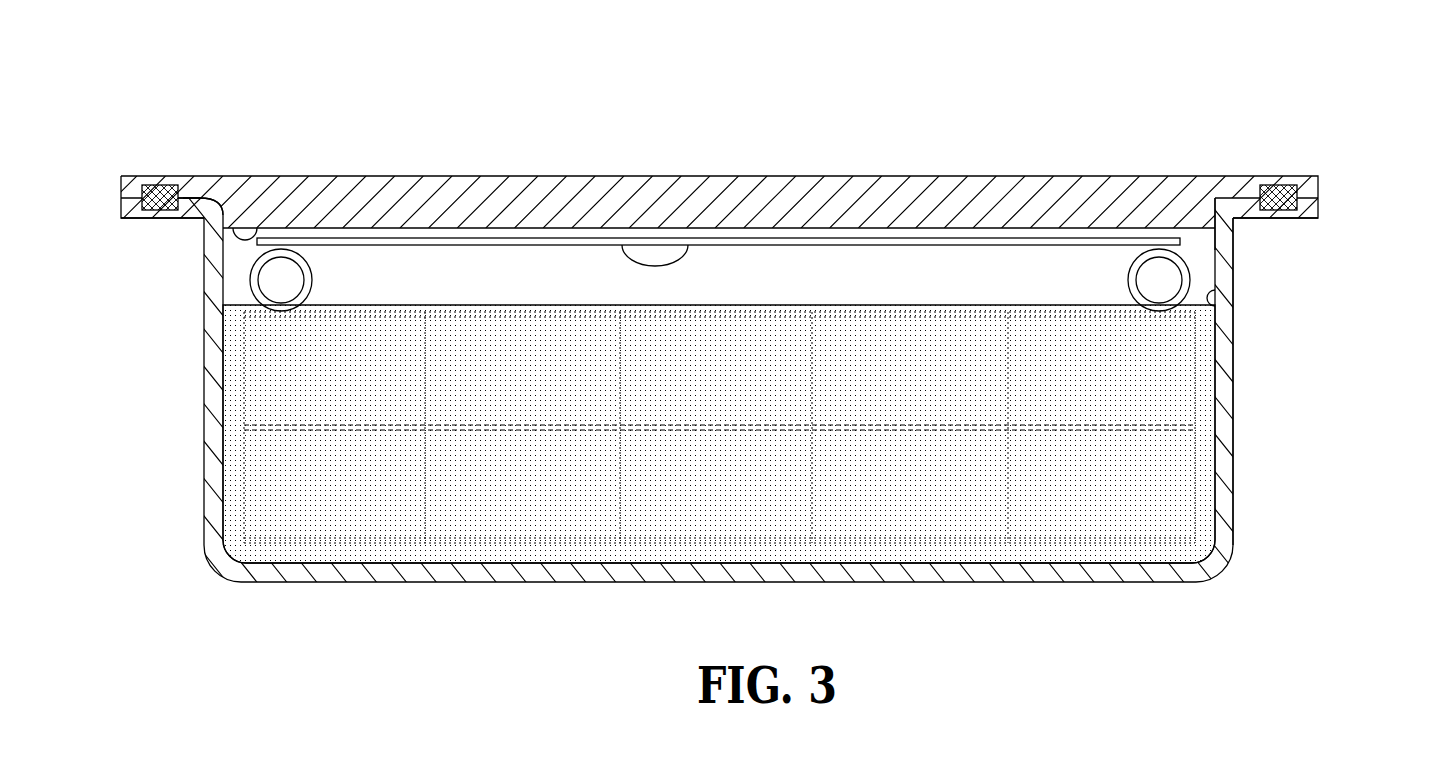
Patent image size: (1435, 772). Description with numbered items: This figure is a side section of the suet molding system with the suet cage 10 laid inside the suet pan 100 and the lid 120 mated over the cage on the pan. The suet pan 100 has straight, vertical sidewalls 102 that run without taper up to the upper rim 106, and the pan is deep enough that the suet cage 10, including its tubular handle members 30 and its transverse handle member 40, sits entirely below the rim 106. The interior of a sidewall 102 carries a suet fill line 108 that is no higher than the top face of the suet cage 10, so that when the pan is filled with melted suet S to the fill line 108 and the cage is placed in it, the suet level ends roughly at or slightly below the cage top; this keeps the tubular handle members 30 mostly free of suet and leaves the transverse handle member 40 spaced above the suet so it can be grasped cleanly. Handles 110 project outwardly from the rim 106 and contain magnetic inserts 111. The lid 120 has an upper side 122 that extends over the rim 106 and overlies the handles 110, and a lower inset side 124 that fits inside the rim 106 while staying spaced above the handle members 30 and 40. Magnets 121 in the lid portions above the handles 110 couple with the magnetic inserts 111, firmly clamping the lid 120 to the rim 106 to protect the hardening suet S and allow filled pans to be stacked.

The suet cage 10 is at (1200, 430).
The tubular handle members 30 is at (250, 281).
The transverse handle member 40 is at (688, 245).
The suet pan 100 is at (1216, 566).
The sidewalls 102 is at (1228, 413).
The upper rim 106 is at (1232, 205).
The suet fill line 108 is at (1213, 292).
The handles 110 is at (188, 223).
The magnetic inserts 111 is at (158, 212).
The lid 120 is at (917, 177).
The magnets 121 is at (160, 183).
The upper side 122 is at (208, 176).
The lower inset side 124 is at (258, 227).
The melted suet S is at (1180, 488).